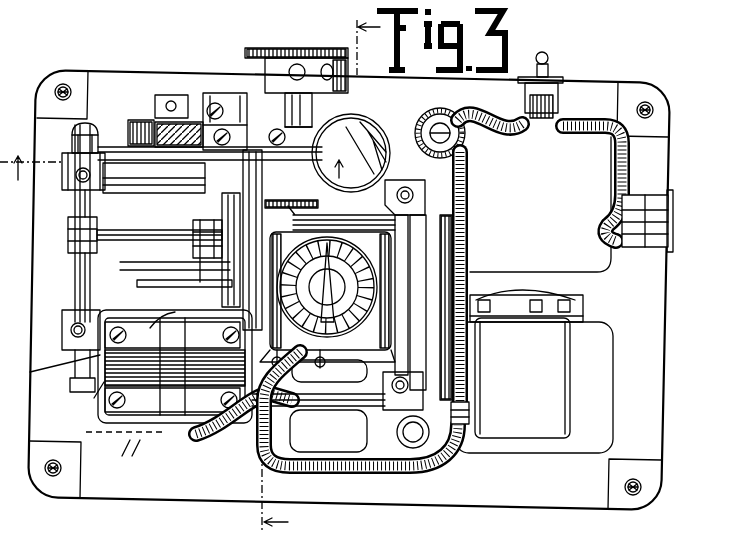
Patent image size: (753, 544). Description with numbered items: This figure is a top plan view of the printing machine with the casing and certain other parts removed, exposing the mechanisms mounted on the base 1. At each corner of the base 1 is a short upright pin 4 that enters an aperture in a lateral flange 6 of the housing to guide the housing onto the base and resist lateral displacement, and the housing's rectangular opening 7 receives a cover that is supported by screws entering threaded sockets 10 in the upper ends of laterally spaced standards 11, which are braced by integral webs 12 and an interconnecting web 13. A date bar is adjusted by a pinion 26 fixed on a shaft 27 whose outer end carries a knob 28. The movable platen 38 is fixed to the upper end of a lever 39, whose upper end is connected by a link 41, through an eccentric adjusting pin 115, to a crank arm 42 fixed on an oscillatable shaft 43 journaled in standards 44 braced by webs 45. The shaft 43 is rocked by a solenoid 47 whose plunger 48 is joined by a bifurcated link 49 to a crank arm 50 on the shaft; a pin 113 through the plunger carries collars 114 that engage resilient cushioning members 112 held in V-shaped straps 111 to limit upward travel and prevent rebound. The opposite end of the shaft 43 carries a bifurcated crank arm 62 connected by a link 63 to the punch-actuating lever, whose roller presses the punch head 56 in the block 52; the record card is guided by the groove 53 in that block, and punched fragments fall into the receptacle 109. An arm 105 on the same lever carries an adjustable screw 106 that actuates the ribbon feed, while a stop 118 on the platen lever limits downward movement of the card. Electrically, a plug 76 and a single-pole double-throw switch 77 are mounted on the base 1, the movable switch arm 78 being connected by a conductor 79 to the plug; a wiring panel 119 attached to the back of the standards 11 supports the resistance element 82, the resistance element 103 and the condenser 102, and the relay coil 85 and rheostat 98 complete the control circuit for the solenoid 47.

The base 1 is at (545, 490).
The upright pin 4 is at (38, 492).
The lateral flange 6 is at (329, 276).
The rectangular opening 7 is at (171, 177).
The threaded socket 10 is at (412, 356).
The standard 11 is at (390, 398).
The web 12 is at (332, 404).
The interconnecting web 13 is at (408, 298).
The pinion 26 is at (318, 206).
The shaft 27 is at (312, 115).
The knob 28 is at (280, 58).
The platen 38 is at (212, 290).
The lever 39 is at (193, 248).
The link 41 is at (158, 238).
The crank arm 42 is at (92, 226).
The oscillatable shaft 43 is at (92, 262).
The standard 44 is at (62, 330).
The web 45 is at (160, 292).
The solenoid 47 is at (82, 398).
The plunger 48 is at (212, 450).
The bifurcated link 49 is at (133, 402).
The crank arm 50 is at (84, 398).
The block 52 is at (276, 128).
The groove 53 is at (250, 100).
The punch head 56 is at (158, 130).
The bifurcated crank arm 62 is at (96, 135).
The link 63 is at (96, 148).
The plug 76 is at (660, 212).
The switch 77 is at (548, 60).
The movable switch arm 78 is at (530, 80).
The conductor 79 is at (590, 118).
The resistance element 82 is at (442, 112).
The relay coil 85 is at (545, 344).
The rheostat 98 is at (344, 264).
The condenser 102 is at (470, 411).
The resistance element 103 is at (410, 448).
The arm 105 is at (183, 100).
The screw 106 is at (214, 102).
The receptacle 109 is at (362, 118).
The strap 111 is at (142, 385).
The resilient cushioning member 112 is at (135, 445).
The pin 113 is at (213, 336).
The collar 114 is at (172, 367).
The pin 115 is at (215, 220).
The stop 118 is at (262, 262).
The wiring panel 119 is at (468, 246).